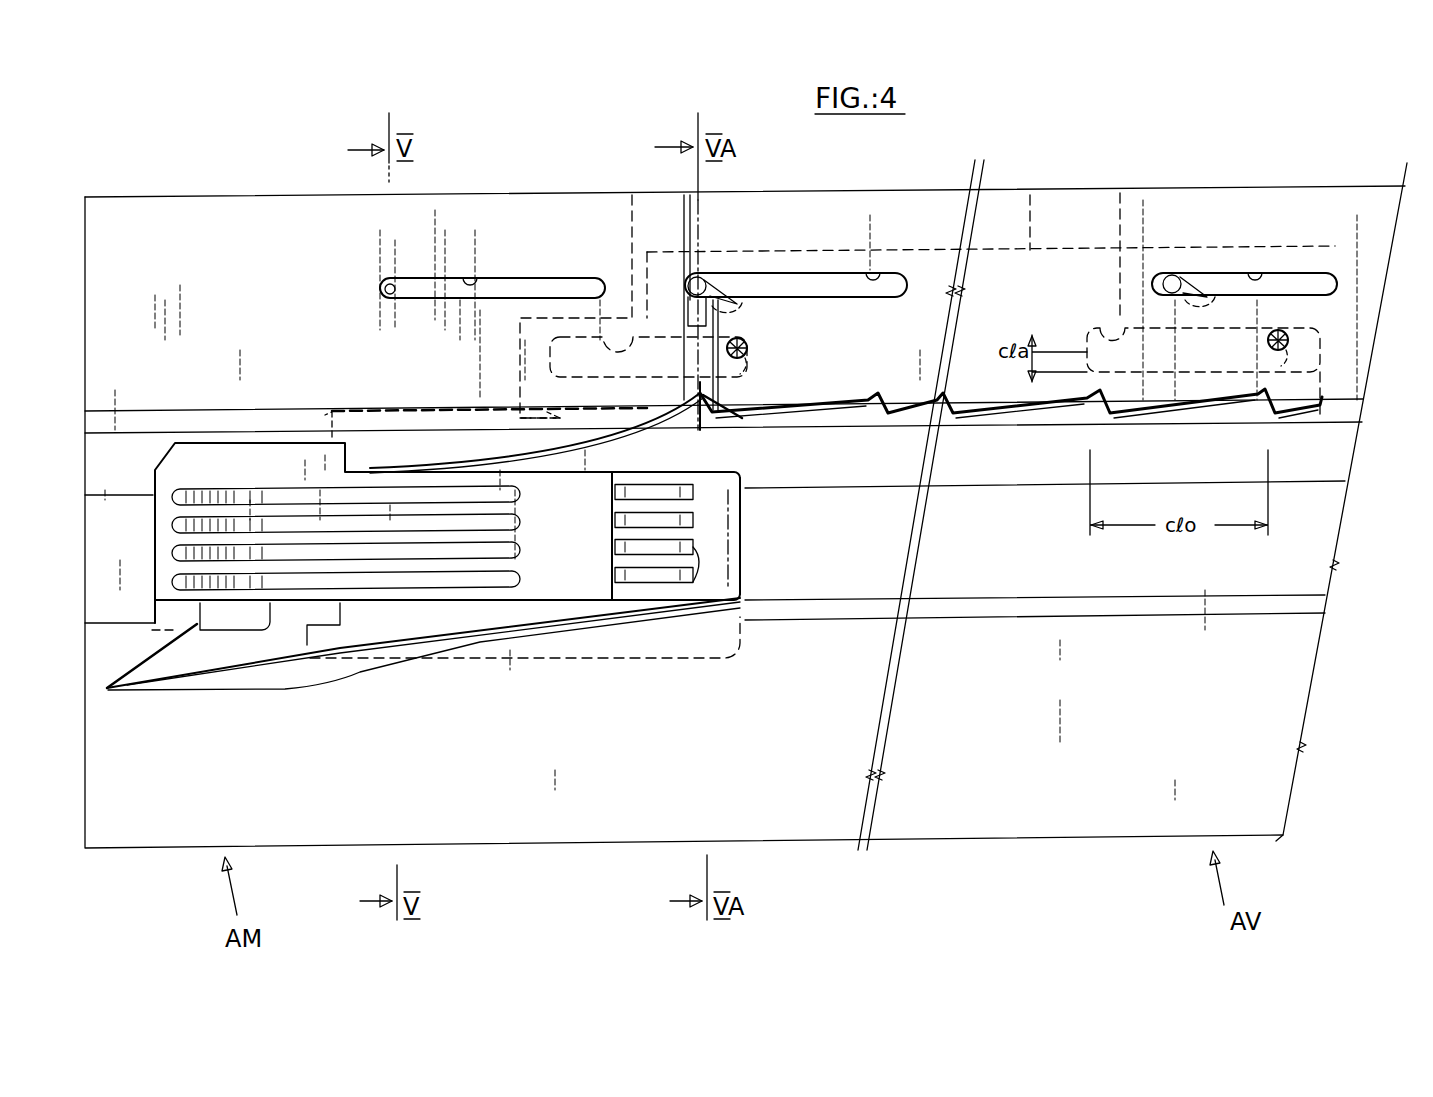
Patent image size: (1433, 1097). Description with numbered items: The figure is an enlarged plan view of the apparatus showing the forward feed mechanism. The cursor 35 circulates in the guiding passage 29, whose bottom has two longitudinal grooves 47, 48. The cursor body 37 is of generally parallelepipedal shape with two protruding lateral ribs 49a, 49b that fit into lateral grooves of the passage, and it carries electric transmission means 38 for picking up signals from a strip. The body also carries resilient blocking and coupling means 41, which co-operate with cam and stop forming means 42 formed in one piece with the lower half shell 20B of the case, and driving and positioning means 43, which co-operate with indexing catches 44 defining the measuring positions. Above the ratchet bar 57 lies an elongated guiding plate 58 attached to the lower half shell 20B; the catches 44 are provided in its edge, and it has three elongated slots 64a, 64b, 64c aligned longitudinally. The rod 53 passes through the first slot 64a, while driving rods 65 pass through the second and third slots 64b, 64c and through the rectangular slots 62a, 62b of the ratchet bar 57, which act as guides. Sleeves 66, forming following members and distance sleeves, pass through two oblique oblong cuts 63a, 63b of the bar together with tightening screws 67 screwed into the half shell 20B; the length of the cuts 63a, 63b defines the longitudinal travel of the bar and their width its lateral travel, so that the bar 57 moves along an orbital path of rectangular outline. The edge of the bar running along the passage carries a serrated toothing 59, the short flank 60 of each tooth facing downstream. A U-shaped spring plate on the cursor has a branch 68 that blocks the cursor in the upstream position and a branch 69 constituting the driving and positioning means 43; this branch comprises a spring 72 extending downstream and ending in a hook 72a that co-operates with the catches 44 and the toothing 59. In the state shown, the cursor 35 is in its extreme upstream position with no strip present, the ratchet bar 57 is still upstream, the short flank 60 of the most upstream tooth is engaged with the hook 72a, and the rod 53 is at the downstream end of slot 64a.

The lower half shell 20B is at (1102, 808).
The passage 29 is at (1058, 614).
The cursor 35 is at (558, 571).
The cursor body 37 is at (715, 530).
The electric transmission means 38 is at (690, 518).
The resilient blocking and coupling means 41 is at (747, 568).
The cam and stop forming means 42 is at (340, 678).
The driving and positioning means 43 is at (540, 452).
The indexing catches 44 is at (1097, 400).
The longitudinal groove 47 is at (1338, 456).
The longitudinal groove 48 is at (1318, 604).
The lateral rib 49a is at (338, 408).
The lateral rib 49b is at (516, 645).
The rod 53 is at (385, 287).
The ratchet bar 57 is at (1030, 195).
The guiding plate 58 is at (243, 308).
The toothing 59 is at (980, 412).
The short flank 60 is at (876, 412).
The slot 62a is at (760, 272).
The slot 62b is at (1212, 262).
The cut 63a is at (632, 195).
The cut 63b is at (1135, 237).
The elongated slot 64a is at (482, 276).
The elongated slot 64b is at (874, 275).
The elongated slot 64c is at (1256, 275).
The driving rods 65 is at (706, 285).
The sleeves 66 is at (748, 352).
The tightening screws 67 is at (748, 345).
The branch 68 is at (450, 640).
The branch 69 is at (577, 468).
The spring 72 is at (625, 450).
The hook 72a is at (735, 416).